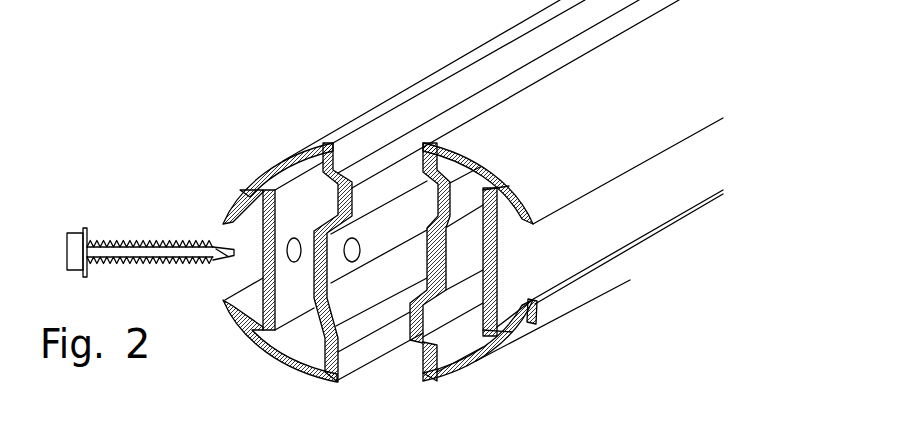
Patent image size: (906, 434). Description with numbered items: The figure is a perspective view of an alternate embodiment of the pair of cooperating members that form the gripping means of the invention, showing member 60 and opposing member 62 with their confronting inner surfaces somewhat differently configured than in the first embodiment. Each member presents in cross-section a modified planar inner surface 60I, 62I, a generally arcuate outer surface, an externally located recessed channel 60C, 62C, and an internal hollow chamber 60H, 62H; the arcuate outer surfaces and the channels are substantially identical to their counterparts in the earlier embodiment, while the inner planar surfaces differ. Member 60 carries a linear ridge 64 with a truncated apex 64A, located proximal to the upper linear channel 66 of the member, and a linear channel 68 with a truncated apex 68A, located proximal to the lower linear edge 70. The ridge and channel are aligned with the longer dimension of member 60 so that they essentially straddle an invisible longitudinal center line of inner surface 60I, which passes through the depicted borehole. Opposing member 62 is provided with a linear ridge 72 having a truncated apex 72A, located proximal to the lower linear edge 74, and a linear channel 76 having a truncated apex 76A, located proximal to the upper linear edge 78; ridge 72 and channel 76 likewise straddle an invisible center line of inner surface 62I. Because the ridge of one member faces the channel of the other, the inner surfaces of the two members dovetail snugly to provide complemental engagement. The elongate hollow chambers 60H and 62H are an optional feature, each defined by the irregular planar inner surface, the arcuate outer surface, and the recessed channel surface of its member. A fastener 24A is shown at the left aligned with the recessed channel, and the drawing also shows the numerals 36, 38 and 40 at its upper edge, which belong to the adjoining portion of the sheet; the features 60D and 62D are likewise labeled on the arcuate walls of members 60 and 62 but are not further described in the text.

The fastener screw 24A is at (118, 242).
The panel member 36 is at (115, 0).
The frame member 38 is at (231, 6).
The connector 40 is at (141, 6).
The member 60 is at (395, 192).
The recessed channel 60C is at (230, 242).
The upper arcuate wall 60D is at (248, 190).
The internal hollow chamber 60H is at (265, 353).
The inner modified planar surface 60I is at (310, 247).
The opposing member 62 is at (490, 216).
The recessed channel 62C is at (597, 298).
The lower arcuate wall 62D is at (547, 313).
The internal hollow chamber 62H is at (528, 205).
The inner modified planar surface 62I is at (417, 265).
The linear ridge 64 is at (277, 163).
The truncated apex 64A is at (387, 145).
The upper linear channel 66 is at (343, 141).
The linear channel 68 is at (345, 348).
The truncated apex 68A is at (313, 345).
The lower linear edge 70 is at (373, 347).
The linear ridge 72 is at (472, 362).
The truncated apex 72A is at (492, 358).
The lower linear edge 74 is at (418, 372).
The linear channel 76 is at (436, 193).
The truncated apex 76A is at (484, 172).
The upper linear edge 78 is at (585, 55).